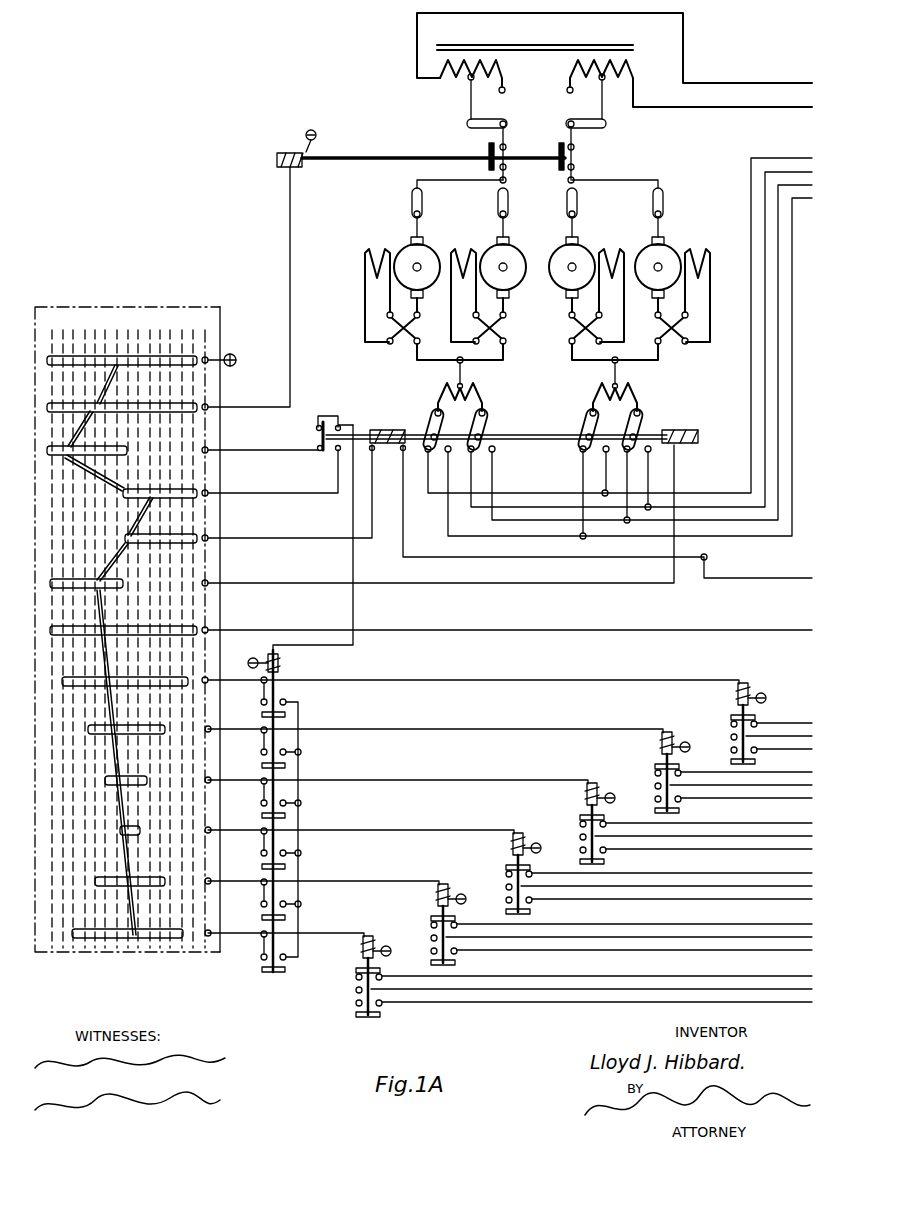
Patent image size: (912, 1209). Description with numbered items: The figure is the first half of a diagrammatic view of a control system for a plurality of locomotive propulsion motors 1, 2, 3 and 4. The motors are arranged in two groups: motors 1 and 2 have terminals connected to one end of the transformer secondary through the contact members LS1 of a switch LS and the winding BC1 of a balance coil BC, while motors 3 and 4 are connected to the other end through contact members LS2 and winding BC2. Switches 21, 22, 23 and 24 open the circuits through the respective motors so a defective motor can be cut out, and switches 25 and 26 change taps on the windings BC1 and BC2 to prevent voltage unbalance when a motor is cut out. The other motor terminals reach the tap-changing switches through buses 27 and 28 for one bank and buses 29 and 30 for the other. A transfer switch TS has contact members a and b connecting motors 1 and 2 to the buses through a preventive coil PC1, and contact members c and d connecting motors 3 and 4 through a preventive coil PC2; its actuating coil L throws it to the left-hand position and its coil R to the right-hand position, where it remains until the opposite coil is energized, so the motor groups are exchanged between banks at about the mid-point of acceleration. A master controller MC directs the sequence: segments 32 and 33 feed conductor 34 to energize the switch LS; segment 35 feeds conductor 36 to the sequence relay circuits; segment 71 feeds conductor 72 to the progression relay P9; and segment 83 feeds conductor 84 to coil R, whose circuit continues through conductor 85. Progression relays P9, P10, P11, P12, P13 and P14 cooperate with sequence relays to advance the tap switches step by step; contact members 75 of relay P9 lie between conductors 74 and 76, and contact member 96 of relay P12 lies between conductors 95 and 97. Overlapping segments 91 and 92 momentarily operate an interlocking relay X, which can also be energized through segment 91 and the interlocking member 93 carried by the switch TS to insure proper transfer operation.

The balance coil BC is at (553, 37).
The winding of balance coil BC1 is at (464, 80).
The winding of balance coil BC2 is at (630, 72).
The switch 25 is at (498, 118).
The switch 26 is at (590, 118).
The switch LS is at (357, 149).
The contact members of switch LS LS1 is at (486, 156).
The contact members of switch LS LS2 is at (580, 160).
The bus 27 is at (620, 318).
The bus 28 is at (641, 334).
The bus 29 is at (652, 347).
The bus 30 is at (630, 368).
The switch 21 is at (411, 206).
The switch 22 is at (497, 206).
The switch 23 is at (566, 206).
The switch 24 is at (652, 206).
The motor 1 is at (390, 248).
The motor 2 is at (478, 248).
The motor 3 is at (548, 248).
The motor 4 is at (634, 248).
The preventive coil PC1 is at (438, 392).
The preventive coil PC2 is at (626, 392).
The transfer switch TS is at (540, 465).
The contact member a is at (436, 440).
The contact member b is at (480, 440).
The contact member c is at (593, 440).
The contact member d is at (636, 440).
The actuating coil L is at (380, 430).
The coil R is at (694, 428).
The interlocking member 93 is at (316, 437).
The conductor 85 is at (607, 511).
The conductor 84 is at (441, 514).
The conductor 36 is at (414, 632).
The master controller MC is at (133, 293).
The segment 32 is at (208, 357).
The segment 33 is at (208, 404).
The conductor 34 is at (292, 316).
The contact segment 91 is at (130, 448).
The contact segment 92 is at (208, 490).
The segment 83 is at (125, 583).
The segment 35 is at (208, 628).
The segment 71 is at (190, 682).
The conductor 72 is at (473, 673).
The interlocking relay X is at (325, 675).
The progression relay P9 is at (748, 673).
The progression relay P10 is at (672, 722).
The progression relay P11 is at (598, 771).
The progression relay P12 is at (523, 821).
The progression relay P13 is at (449, 873).
The progression relay P14 is at (398, 925).
The conductor 74 is at (784, 727).
The conductor 76 is at (779, 742).
The contact members 75 is at (756, 762).
The contact member 96 is at (507, 869).
The conductor 97 is at (792, 864).
The conductor 95 is at (791, 879).